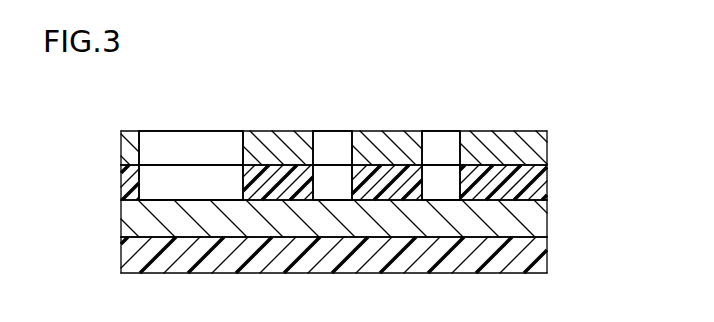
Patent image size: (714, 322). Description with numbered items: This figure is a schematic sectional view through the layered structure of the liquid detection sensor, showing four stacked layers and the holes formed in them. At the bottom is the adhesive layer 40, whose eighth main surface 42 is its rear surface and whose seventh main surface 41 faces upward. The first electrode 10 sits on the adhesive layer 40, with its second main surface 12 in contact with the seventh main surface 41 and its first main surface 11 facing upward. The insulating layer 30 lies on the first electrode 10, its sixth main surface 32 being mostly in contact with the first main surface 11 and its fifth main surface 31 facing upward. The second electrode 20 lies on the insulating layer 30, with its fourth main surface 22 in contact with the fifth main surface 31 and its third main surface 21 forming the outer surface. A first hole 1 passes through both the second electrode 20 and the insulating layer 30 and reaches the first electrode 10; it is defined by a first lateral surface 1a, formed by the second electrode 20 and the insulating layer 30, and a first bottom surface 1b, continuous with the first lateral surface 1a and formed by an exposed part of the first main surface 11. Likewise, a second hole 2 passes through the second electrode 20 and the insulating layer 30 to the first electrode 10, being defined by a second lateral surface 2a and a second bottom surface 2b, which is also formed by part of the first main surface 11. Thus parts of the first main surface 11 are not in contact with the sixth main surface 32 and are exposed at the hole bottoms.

The first hole 1 is at (377, 83).
The first lateral surface 1a is at (314, 148).
The first bottom surface 1b is at (333, 199).
The second hole 2 is at (218, 83).
The second lateral surface 2a is at (139, 148).
The second bottom surface 2b is at (199, 199).
The first electrode 10 is at (125, 225).
The first main surface 11 is at (537, 200).
The second main surface 12 is at (530, 239).
The second electrode 20 is at (125, 152).
The third main surface 21 is at (533, 131).
The fourth main surface 22 is at (527, 177).
The insulating layer 30 is at (125, 188).
The fifth main surface 31 is at (524, 170).
The sixth main surface 32 is at (517, 199).
The adhesive layer 40 is at (125, 259).
The seventh main surface 41 is at (533, 230).
The eighth main surface 42 is at (530, 274).